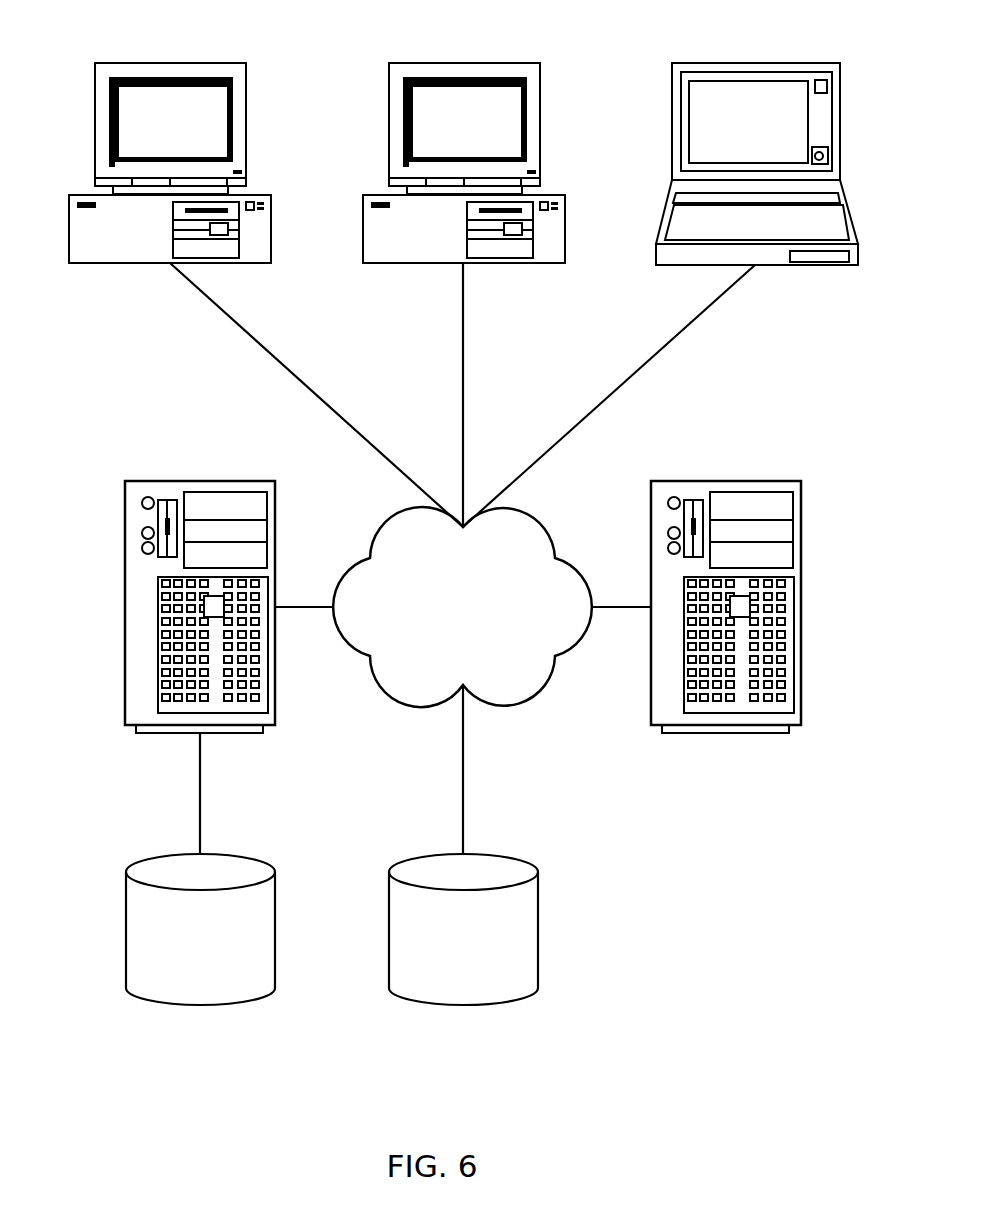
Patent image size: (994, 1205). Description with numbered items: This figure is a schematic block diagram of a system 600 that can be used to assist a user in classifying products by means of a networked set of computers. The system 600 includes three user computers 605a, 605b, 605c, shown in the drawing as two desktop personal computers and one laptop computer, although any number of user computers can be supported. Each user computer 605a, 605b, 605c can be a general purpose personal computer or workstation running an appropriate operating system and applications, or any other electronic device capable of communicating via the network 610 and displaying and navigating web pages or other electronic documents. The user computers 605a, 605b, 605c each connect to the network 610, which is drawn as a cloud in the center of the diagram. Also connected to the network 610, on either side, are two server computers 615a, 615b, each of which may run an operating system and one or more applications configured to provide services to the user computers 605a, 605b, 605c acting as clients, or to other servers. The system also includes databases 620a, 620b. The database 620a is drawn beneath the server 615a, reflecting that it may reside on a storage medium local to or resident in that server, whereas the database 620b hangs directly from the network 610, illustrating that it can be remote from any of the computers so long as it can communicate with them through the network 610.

The system 600 is at (710, 1052).
The user computer 605a is at (271, 213).
The user computer 605b is at (363, 213).
The user computer 605c is at (670, 163).
The network 610 is at (500, 708).
The server computer 615a is at (125, 607).
The server computer 615b is at (802, 607).
The database 620a is at (200, 1004).
The database 620b is at (463, 1004).